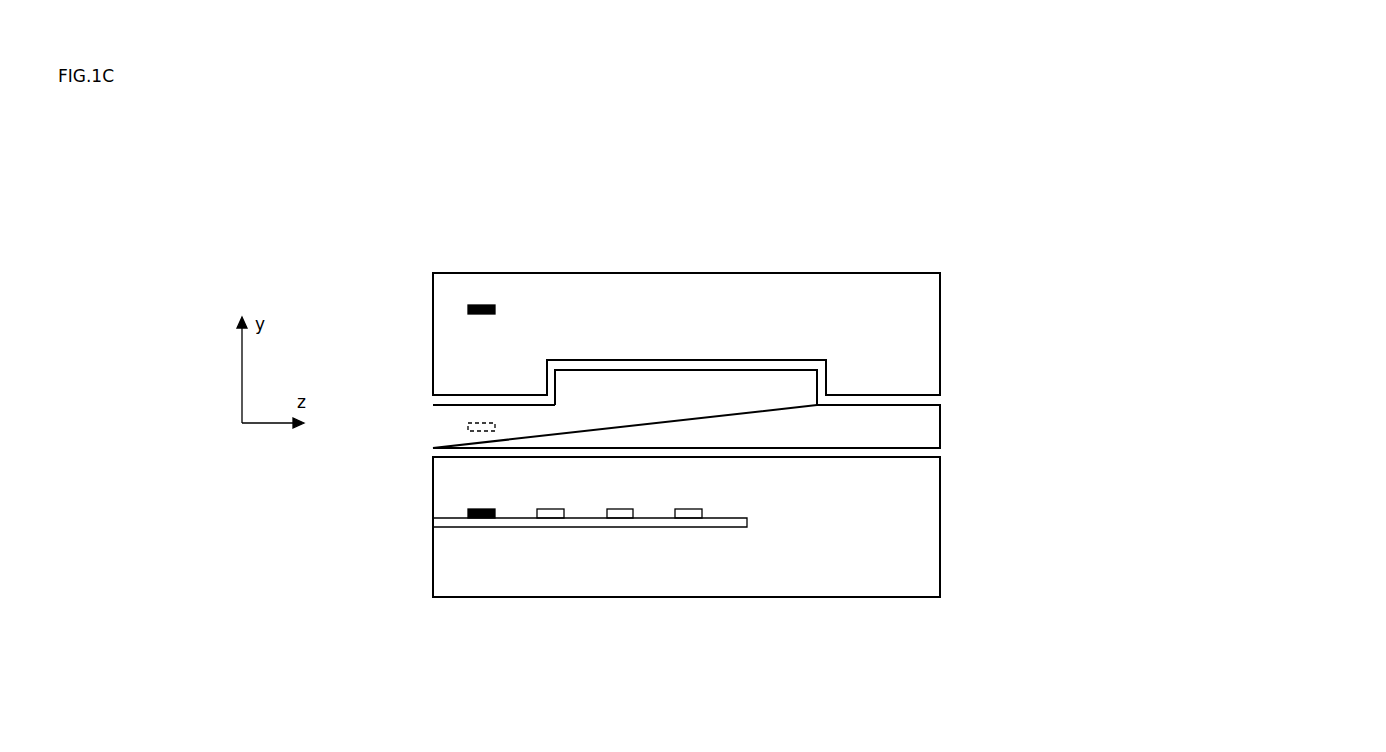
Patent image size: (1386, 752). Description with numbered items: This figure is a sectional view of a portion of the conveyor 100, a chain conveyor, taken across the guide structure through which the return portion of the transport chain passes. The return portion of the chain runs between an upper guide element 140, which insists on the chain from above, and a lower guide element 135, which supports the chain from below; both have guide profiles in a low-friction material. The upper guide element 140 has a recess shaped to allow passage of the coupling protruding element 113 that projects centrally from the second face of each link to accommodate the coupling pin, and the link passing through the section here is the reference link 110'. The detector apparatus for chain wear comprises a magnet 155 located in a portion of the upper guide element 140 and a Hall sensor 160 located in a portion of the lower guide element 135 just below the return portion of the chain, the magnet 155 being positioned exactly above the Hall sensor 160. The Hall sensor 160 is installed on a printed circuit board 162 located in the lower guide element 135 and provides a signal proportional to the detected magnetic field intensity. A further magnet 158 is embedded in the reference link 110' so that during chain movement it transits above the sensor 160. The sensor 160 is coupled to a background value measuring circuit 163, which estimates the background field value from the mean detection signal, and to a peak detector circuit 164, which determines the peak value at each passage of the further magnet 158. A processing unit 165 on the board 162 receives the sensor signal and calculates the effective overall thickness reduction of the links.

The conveyor 100 is at (1322, 122).
The upper guide element 140 is at (895, 285).
The coupling protruding element 113 is at (720, 380).
The reference link 110' is at (744, 419).
The magnet 155 is at (481, 303).
The further magnet 158 is at (481, 421).
The lower guide element 135 is at (867, 588).
The printed circuit board 162 is at (490, 527).
The Hall sensor 160 is at (486, 510).
The background value measuring circuit 163 is at (556, 511).
The peak detector circuit 164 is at (626, 511).
The processing unit 165 is at (694, 511).